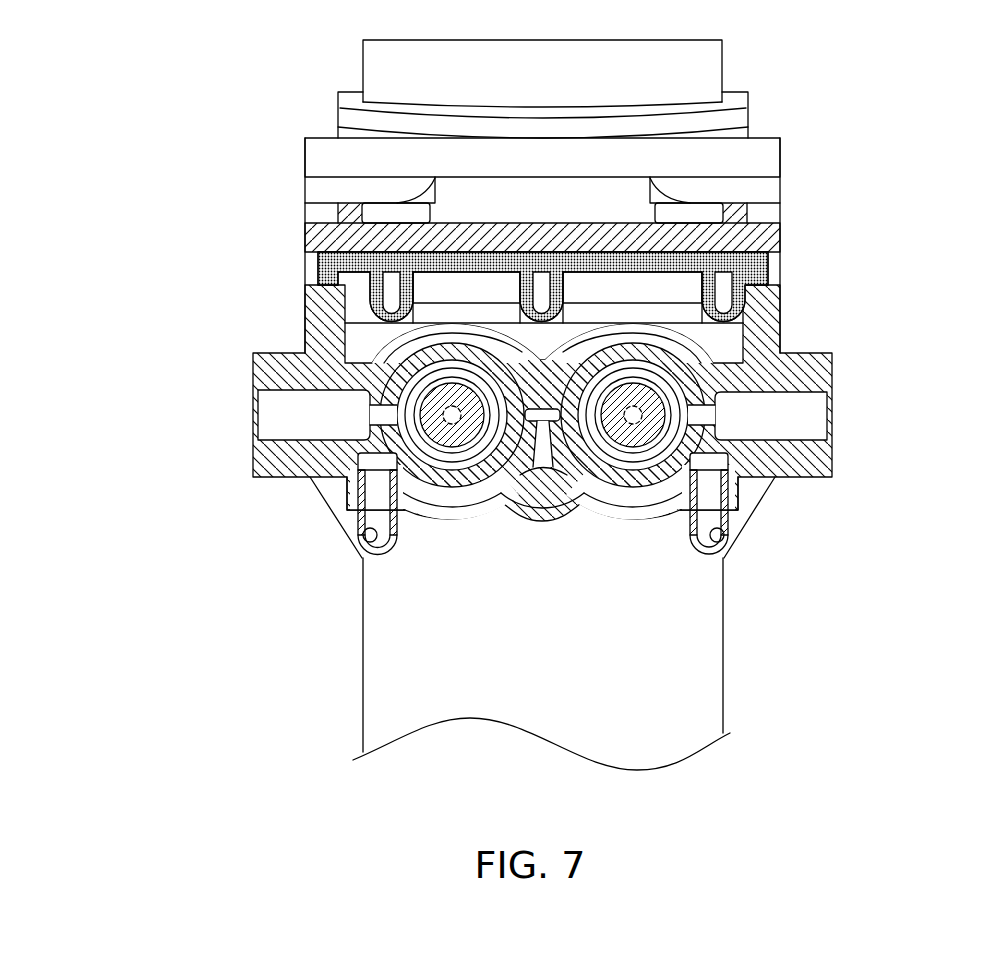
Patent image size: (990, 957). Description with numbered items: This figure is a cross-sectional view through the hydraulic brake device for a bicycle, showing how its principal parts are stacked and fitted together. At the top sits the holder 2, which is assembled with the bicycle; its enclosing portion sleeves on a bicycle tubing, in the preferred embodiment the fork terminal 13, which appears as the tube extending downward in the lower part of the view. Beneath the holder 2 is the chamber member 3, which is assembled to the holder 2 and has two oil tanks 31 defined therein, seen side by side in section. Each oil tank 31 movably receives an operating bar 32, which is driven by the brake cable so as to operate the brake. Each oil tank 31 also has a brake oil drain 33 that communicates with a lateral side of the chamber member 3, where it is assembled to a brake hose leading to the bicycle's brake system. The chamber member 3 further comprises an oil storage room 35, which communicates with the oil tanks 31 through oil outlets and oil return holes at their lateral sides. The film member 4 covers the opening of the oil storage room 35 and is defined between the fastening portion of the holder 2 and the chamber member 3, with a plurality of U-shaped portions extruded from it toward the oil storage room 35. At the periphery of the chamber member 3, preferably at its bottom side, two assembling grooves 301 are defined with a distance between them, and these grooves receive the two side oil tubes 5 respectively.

The holder 2 is at (680, 232).
The chamber member 3 is at (212, 180).
The film member 4 is at (768, 262).
The side oil tube 5 is at (750, 520).
The fork terminal 13 is at (703, 648).
The oil tank 31 is at (665, 367).
The operating bar 32 is at (438, 383).
The brake oil drain 33 is at (820, 415).
The oil storage room 35 is at (346, 316).
The assembling groove 301 is at (775, 478).